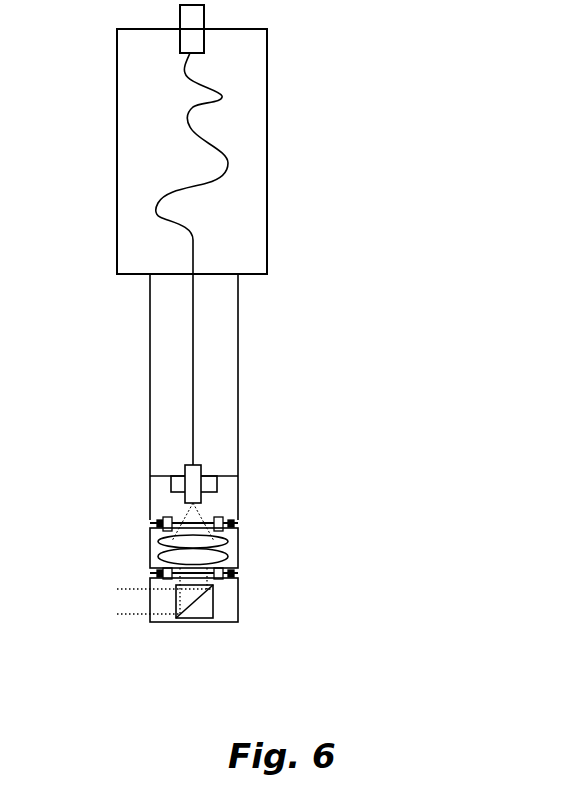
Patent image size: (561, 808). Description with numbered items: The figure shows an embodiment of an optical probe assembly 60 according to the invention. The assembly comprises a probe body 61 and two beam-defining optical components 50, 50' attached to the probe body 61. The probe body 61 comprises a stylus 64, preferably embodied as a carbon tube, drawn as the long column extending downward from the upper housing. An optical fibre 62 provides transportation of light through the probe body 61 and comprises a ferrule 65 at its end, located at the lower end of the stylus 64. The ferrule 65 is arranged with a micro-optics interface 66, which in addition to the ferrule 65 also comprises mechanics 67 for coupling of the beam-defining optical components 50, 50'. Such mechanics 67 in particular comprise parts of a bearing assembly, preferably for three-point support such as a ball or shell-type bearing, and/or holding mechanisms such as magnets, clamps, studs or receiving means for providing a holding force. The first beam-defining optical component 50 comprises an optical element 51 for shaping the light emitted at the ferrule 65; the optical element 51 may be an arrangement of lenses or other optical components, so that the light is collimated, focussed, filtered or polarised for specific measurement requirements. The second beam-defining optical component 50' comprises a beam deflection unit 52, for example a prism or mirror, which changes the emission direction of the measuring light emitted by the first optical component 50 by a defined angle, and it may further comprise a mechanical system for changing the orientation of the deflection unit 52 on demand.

The optical probe assembly 60 is at (398, 6).
The probe body 61 is at (293, 5).
The optical fibre 62 is at (161, 199).
The stylus 64 is at (160, 400).
The ferrule 65 is at (198, 482).
The micro-optics interface 66 is at (165, 498).
The mechanics 67 is at (143, 523).
The optical element 51 is at (175, 543).
The first beam-defining optical component 50 is at (329, 554).
The second beam-defining optical component 50' is at (245, 598).
The beam deflection unit 52 is at (200, 612).